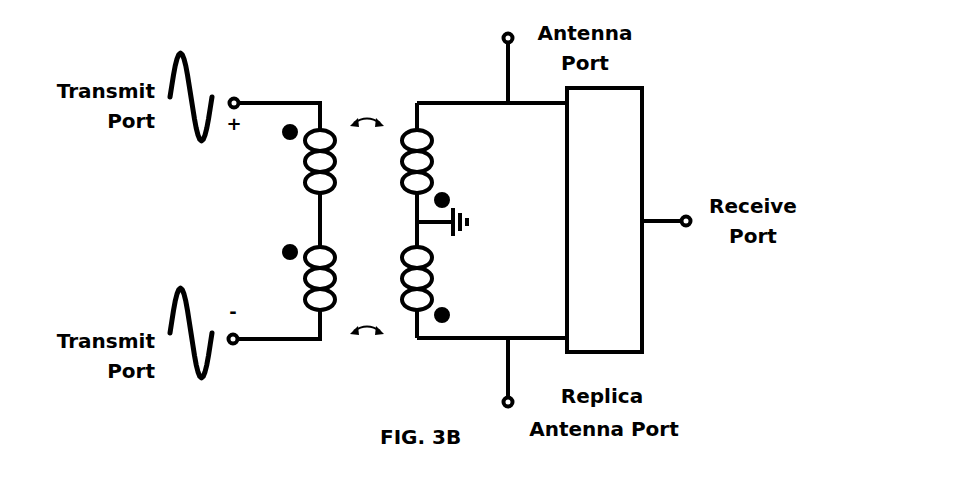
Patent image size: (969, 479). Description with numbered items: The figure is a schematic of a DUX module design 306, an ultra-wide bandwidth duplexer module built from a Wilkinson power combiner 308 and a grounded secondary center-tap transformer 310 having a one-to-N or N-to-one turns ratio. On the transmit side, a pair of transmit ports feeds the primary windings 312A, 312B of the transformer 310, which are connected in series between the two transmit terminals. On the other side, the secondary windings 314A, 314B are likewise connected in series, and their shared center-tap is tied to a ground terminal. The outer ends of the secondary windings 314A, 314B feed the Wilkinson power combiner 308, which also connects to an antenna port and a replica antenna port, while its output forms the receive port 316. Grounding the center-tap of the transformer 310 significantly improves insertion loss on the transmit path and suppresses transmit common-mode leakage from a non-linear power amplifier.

The DUX module design 306 is at (672, 62).
The Wilkinson power combiner 308 is at (643, 143).
The grounded secondary center-tap transformer 310 is at (370, 92).
The primary winding 312A is at (305, 155).
The primary winding 312B is at (305, 290).
The secondary winding 314A is at (432, 150).
The secondary winding 314B is at (432, 268).
The receive port 316 is at (690, 227).